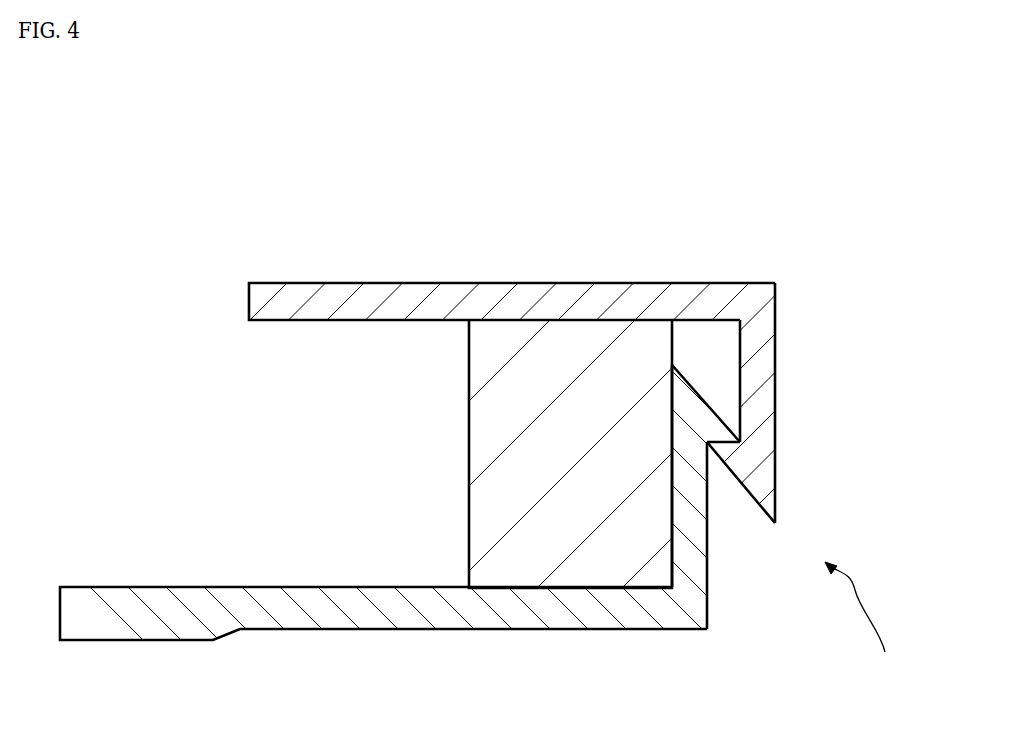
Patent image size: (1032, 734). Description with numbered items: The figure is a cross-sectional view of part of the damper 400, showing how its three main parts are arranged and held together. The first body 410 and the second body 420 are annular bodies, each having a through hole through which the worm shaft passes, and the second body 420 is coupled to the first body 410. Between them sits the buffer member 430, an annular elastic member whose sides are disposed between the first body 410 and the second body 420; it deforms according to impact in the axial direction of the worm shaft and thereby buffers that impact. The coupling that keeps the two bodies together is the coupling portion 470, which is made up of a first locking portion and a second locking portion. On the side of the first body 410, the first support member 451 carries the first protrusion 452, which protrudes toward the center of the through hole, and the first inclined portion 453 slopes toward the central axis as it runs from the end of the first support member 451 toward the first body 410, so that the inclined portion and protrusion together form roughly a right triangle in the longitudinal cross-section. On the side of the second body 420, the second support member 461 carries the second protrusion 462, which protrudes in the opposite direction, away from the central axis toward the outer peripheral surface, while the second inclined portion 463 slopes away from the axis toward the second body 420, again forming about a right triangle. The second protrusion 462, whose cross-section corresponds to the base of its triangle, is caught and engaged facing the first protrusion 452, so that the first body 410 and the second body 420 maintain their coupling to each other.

The damper 400 is at (181, 117).
The first body 410 is at (345, 610).
The second body 420 is at (376, 300).
The buffer member 430 is at (503, 455).
The first support member 451 is at (688, 560).
The first protrusion 452 is at (733, 428).
The first inclined portion 453 is at (700, 392).
The second support member 461 is at (775, 382).
The second protrusion 462 is at (725, 452).
The second inclined portion 463 is at (753, 500).
The coupling portion 470 is at (880, 619).